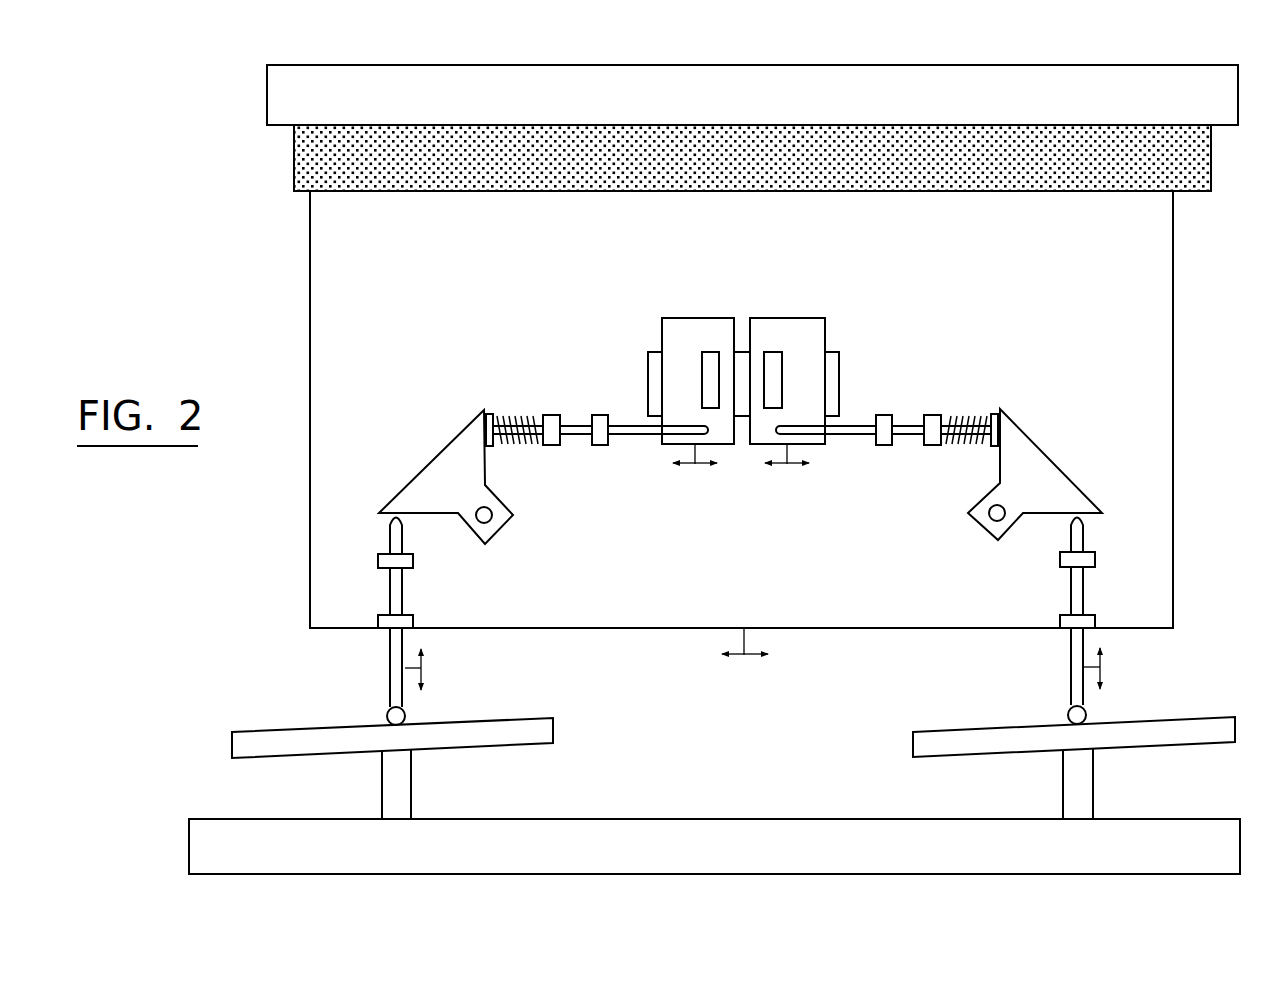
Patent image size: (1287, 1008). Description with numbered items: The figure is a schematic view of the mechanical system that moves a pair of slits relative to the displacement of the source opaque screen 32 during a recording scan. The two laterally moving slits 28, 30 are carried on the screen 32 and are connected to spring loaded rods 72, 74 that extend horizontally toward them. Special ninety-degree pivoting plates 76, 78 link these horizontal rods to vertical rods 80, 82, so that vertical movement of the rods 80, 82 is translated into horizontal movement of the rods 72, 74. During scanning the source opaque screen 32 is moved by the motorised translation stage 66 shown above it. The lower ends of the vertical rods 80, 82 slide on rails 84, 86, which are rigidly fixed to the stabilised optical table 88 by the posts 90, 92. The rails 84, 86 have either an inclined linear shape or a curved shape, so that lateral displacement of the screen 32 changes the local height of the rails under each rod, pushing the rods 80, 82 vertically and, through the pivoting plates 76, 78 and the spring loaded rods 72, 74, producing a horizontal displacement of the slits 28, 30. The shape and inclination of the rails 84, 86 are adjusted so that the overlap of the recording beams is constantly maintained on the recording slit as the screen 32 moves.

The slit 28 is at (697, 328).
The slit 30 is at (794, 328).
The source opaque screen 32 is at (1173, 313).
The motorised translation stage 66 is at (296, 156).
The spring loaded rod 72 is at (640, 436).
The spring loaded rod 74 is at (912, 436).
The pivoting plate 76 is at (443, 514).
The pivoting plate 78 is at (1050, 514).
The vertical rod 80 is at (390, 660).
The vertical rod 82 is at (1072, 653).
The rail 84 is at (535, 745).
The rail 86 is at (947, 757).
The stabilised optical table 88 is at (778, 875).
The post 90 is at (413, 775).
The post 92 is at (1093, 778).